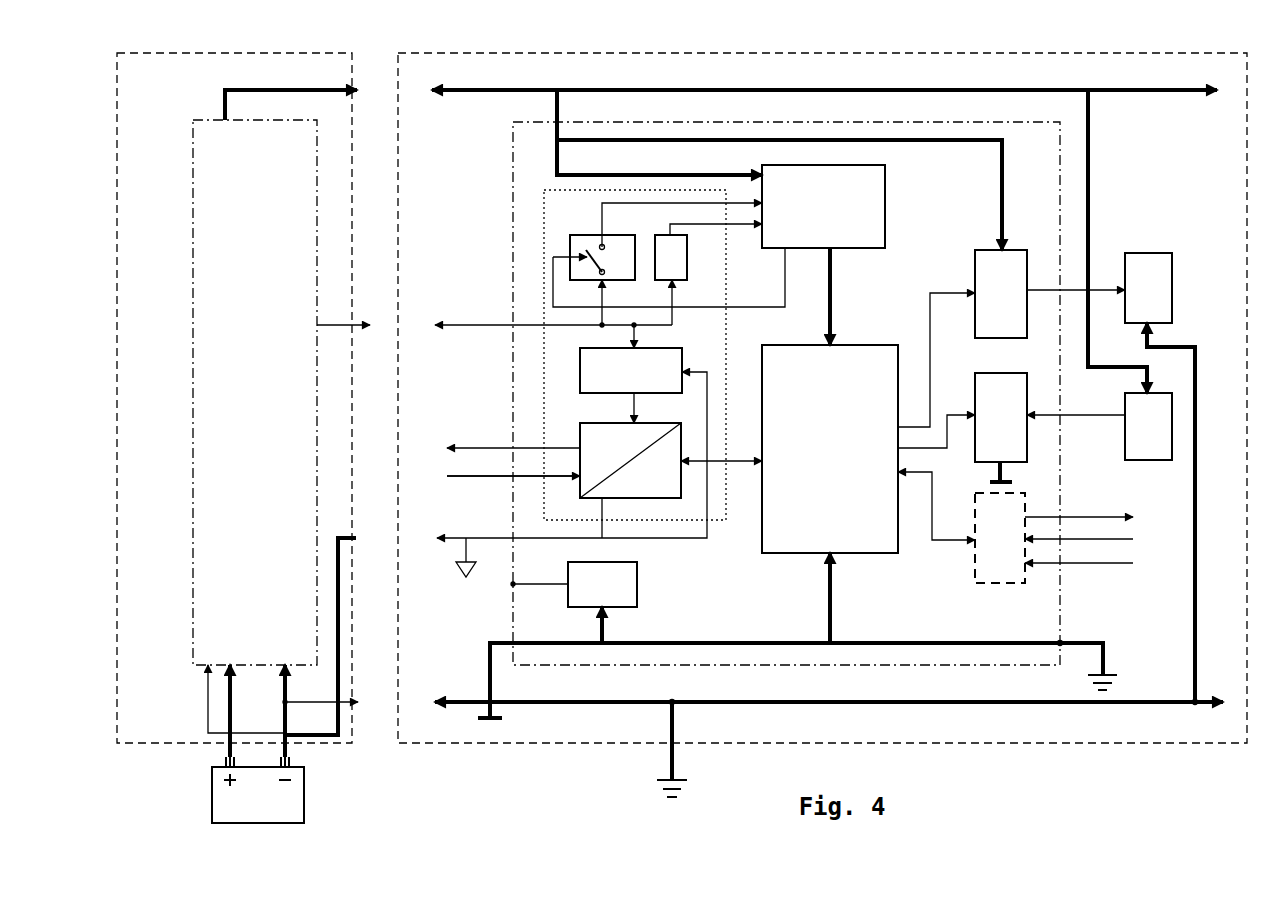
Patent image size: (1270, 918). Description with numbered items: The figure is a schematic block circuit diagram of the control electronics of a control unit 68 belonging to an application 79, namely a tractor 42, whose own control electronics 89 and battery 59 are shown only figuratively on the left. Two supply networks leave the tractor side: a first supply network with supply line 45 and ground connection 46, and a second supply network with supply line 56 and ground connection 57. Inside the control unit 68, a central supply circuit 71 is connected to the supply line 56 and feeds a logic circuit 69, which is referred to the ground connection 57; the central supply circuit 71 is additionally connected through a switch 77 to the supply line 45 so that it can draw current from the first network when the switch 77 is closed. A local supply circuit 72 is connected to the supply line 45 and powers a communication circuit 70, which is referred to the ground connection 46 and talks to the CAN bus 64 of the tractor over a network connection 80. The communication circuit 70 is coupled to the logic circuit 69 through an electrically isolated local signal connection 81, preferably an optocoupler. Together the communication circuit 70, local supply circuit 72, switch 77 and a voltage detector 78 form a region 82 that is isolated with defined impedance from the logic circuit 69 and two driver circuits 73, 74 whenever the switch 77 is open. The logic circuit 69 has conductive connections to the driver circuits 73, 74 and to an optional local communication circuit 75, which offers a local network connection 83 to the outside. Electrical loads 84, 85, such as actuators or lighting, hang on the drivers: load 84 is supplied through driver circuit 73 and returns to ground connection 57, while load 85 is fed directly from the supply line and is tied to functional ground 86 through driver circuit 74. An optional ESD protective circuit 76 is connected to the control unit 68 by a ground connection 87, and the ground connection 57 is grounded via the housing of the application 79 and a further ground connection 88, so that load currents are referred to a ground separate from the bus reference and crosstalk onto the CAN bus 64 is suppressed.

The tractor 42 is at (212, 53).
The supply line of the first supply network 45 is at (330, 323).
The ground connection of the first supply network 46 is at (473, 538).
The supply line of the second supply network 56 is at (325, 90).
The ground connection of the second supply network 57 is at (333, 705).
The battery 59 is at (305, 795).
The CAN bus 64 is at (468, 475).
The control unit 68 is at (752, 122).
The logic circuit 69 is at (830, 449).
The communication circuit 70 is at (580, 432).
The central supply circuit 71 is at (823, 255).
The local supply circuit 72 is at (631, 385).
The driver circuit 73 is at (962, 338).
The driver circuit 74 is at (962, 417).
The local communication circuit 75 is at (961, 527).
The protective circuit 76 is at (574, 584).
The switch 77 is at (570, 245).
The voltage detector 78 is at (688, 255).
The application 79 is at (900, 53).
The network connection 80 is at (510, 467).
The local signal connection 81 is at (735, 463).
The region 82 is at (545, 203).
The local network connection 83 is at (1143, 540).
The electrical load 84 is at (1099, 288).
The electrical load 85 is at (1099, 426).
The functional ground 86 is at (1012, 483).
The ground connection 87 is at (1103, 688).
The ground connection 88 is at (678, 790).
The control electronics of the tractor 89 is at (193, 260).